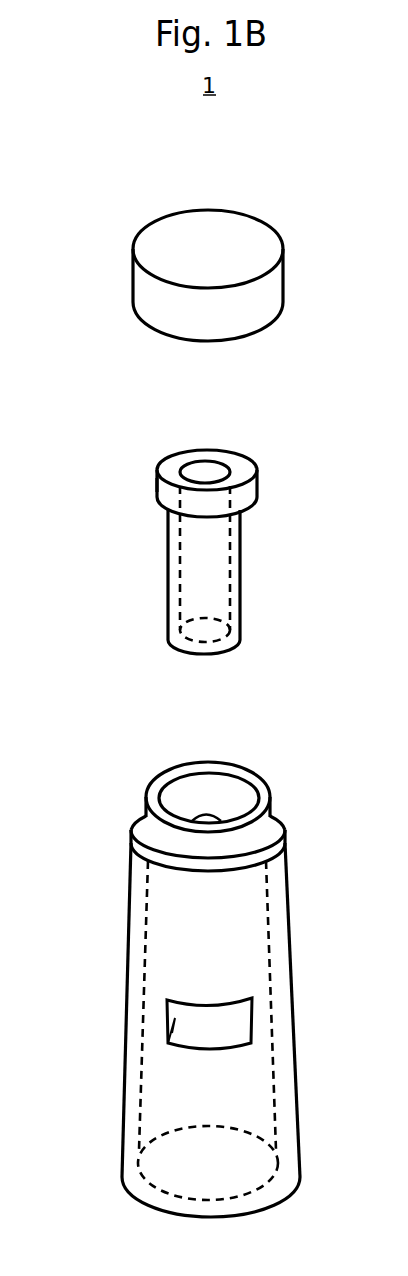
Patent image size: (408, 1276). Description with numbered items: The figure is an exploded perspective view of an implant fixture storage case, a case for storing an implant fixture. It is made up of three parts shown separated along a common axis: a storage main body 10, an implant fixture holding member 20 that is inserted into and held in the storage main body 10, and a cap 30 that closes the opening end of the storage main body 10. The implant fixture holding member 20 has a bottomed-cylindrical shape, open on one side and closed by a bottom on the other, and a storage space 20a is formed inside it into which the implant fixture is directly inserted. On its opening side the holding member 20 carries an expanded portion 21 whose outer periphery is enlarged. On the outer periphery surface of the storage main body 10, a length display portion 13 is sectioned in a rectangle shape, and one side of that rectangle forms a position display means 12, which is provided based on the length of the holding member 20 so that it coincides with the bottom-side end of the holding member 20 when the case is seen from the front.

The storage main body 10 is at (88, 823).
The position display means 12 is at (211, 1005).
The length display portion 13 is at (168, 1042).
The implant fixture holding member 20 is at (106, 457).
The storage space 20a is at (205, 473).
The expanded portion 21 is at (166, 497).
The cap 30 is at (165, 237).